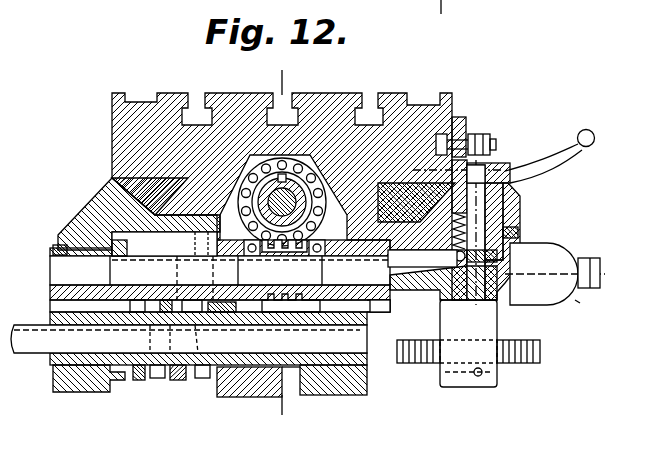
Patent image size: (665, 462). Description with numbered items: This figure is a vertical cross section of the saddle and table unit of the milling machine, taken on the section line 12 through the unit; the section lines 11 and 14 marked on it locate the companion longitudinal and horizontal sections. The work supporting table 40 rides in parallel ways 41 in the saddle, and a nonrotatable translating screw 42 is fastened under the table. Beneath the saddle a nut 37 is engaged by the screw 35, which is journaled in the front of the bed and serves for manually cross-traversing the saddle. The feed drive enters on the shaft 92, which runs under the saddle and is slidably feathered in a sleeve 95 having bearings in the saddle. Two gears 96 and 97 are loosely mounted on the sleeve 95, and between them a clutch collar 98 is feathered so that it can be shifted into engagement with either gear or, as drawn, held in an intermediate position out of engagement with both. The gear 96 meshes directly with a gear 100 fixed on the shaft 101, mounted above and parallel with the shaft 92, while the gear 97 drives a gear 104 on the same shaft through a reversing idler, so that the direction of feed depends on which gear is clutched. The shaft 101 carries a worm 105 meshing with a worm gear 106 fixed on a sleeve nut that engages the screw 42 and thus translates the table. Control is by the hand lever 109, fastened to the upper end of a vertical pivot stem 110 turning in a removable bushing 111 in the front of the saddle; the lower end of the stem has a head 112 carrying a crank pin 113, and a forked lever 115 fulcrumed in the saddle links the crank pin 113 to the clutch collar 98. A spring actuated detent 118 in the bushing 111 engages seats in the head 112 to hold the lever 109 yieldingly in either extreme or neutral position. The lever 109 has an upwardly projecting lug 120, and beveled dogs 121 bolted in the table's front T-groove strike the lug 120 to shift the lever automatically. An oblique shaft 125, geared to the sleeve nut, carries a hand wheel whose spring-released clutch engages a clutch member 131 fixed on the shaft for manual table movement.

The section line 11— 11 is at (302, 76).
The section line 12— 12 is at (423, 5).
The section line 14— 14 is at (413, 148).
The screw 35 is at (417, 365).
The nut 37 is at (98, 194).
The work supporting table 40 is at (112, 122).
The ways 41 is at (180, 200).
The translating screw 42 is at (243, 185).
The shaft 92 is at (189, 339).
The sleeve 95 is at (149, 325).
The gear 96 is at (118, 381).
The gear 97 is at (207, 367).
The clutch collar 98 is at (178, 381).
The gear 100 is at (126, 243).
The shaft 101 is at (220, 270).
The gear 104 is at (212, 287).
The worm 105 is at (292, 299).
The worm gear 106 is at (332, 160).
The hand lever 109 is at (586, 146).
The pivot stem 110 is at (520, 198).
The bushing 111 is at (503, 221).
The head or flange 112 is at (518, 236).
The crank pin 113 is at (412, 279).
The lever 115 is at (160, 379).
The spring actuated ball or detent 118 is at (455, 255).
The lug 120 is at (470, 133).
The dog 121 is at (462, 118).
The shaft 125 is at (600, 266).
The clutch member 131 is at (570, 299).